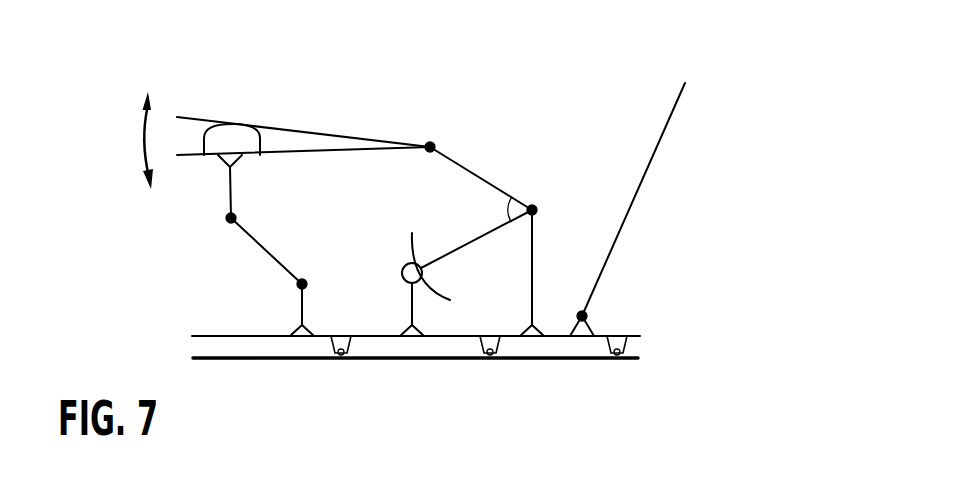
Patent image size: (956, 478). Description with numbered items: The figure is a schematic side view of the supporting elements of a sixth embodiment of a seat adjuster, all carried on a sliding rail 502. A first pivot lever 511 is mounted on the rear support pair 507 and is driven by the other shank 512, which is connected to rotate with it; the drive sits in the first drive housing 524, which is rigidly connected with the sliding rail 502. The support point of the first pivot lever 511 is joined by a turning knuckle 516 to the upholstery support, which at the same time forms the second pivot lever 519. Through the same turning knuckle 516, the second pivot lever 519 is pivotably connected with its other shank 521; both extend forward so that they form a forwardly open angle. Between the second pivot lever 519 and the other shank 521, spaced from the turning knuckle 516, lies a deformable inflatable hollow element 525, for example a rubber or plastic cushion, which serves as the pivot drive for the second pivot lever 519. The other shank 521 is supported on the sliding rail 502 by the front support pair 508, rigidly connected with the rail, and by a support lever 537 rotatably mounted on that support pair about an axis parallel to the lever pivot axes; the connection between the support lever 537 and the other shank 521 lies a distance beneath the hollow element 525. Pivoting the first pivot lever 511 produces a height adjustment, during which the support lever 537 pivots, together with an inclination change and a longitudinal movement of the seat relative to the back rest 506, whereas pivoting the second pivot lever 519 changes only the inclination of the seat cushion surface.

The sliding rail 502 is at (448, 331).
The back rest 506 is at (643, 185).
The rear support pair 507 is at (538, 258).
The front support pair 508 is at (297, 306).
The first pivot lever 511 is at (490, 180).
The other shank 512 is at (468, 246).
The turning knuckle 516 is at (433, 146).
The second pivot lever 519 is at (303, 130).
The other shank 521 is at (191, 156).
The first drive housing 524 is at (402, 273).
The inflatable hollow element 525 is at (220, 137).
The support lever 537 is at (243, 235).